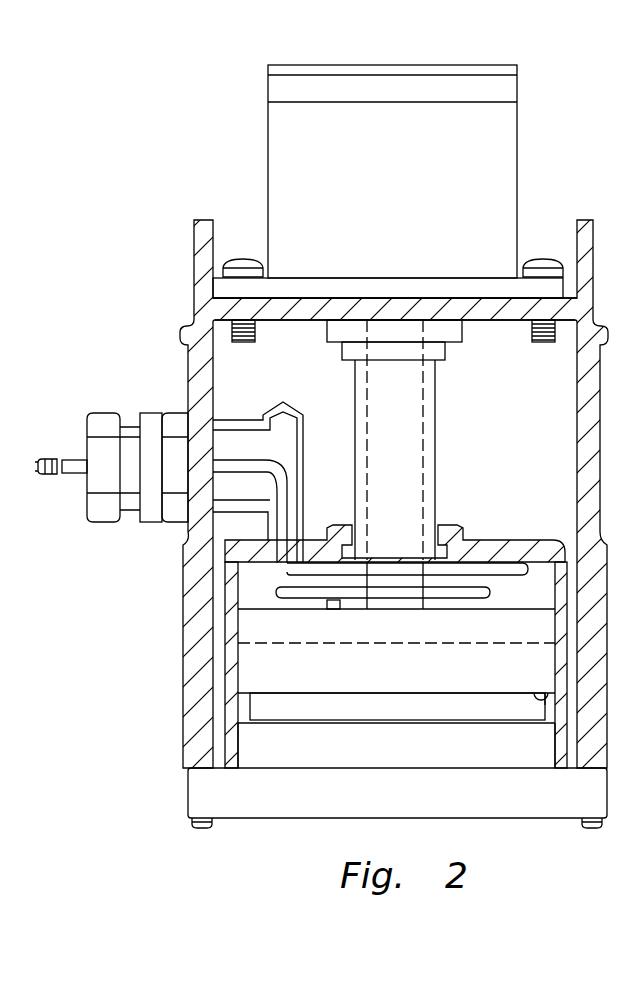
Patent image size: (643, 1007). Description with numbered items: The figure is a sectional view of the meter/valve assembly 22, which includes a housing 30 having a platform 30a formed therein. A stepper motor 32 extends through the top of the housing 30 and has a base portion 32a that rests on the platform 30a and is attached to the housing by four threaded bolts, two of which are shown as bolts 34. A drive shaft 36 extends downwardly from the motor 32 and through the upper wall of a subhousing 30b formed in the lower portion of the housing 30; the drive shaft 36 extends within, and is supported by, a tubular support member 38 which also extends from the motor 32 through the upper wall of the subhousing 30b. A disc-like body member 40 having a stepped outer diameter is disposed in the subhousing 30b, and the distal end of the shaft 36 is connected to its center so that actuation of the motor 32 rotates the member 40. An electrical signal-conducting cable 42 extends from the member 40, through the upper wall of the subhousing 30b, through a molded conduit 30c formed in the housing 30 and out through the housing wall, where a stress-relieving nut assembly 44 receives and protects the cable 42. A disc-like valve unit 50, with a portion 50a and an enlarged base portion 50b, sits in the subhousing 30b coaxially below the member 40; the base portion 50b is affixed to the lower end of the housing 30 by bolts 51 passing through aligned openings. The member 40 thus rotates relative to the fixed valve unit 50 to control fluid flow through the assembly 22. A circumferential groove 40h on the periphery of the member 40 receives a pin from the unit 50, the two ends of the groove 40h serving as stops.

The meter/valve assembly 22 is at (166, 231).
The housing 30 is at (192, 310).
The platform 30a is at (492, 313).
The subhousing 30b is at (543, 541).
The molded conduit 30c is at (303, 420).
The stepper motor 32 is at (270, 162).
The base portion 32a is at (391, 284).
The threaded bolts 34 is at (241, 259).
The drive shaft 36 is at (428, 437).
The tubular support member 38 is at (437, 477).
The body member 40 is at (381, 681).
The circumferential groove 40h is at (536, 692).
The electrical signal-conducting cable 42 is at (45, 460).
The stress-relieving nut assembly 44 is at (152, 413).
The valve unit 50 is at (312, 826).
The base upper portion 50a is at (378, 756).
The base portion 50b is at (378, 804).
The bolts 51 is at (200, 829).